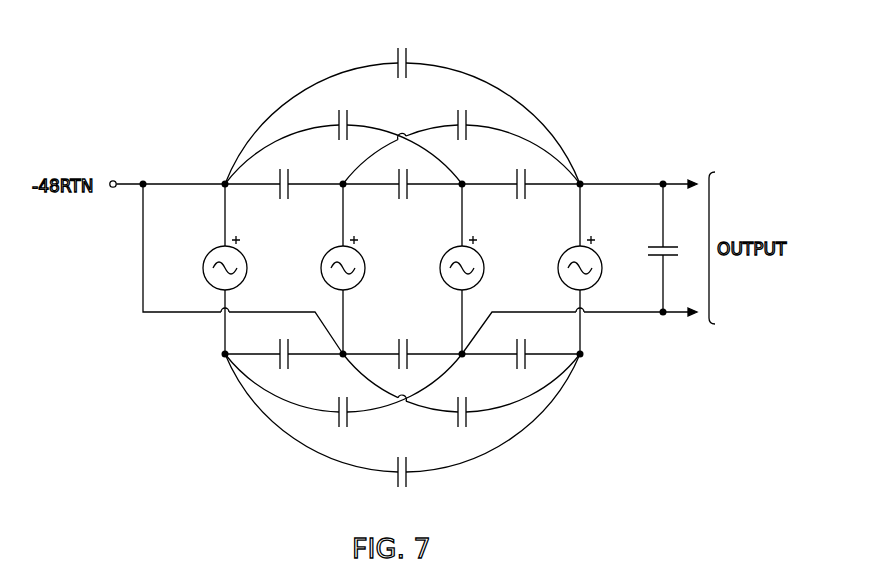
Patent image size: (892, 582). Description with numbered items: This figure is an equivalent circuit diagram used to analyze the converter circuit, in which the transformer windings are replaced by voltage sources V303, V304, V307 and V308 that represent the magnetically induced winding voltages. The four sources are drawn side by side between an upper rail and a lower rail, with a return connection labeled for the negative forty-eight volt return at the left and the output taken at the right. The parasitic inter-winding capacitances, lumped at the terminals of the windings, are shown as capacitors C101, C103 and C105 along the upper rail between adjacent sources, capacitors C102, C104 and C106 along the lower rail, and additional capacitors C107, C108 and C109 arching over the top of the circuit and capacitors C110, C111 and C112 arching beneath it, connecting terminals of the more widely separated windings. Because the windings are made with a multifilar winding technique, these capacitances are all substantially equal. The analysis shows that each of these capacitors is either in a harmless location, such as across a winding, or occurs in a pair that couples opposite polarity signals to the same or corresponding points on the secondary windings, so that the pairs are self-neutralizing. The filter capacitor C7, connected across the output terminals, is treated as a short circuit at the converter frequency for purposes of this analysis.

The parasitic inter-winding capacitance C101 is at (283, 196).
The parasitic inter-winding capacitance C102 is at (285, 343).
The parasitic inter-winding capacitance C103 is at (402, 196).
The parasitic inter-winding capacitance C104 is at (402, 343).
The parasitic inter-winding capacitance C105 is at (521, 196).
The parasitic inter-winding capacitance C106 is at (521, 343).
The parasitic inter-winding capacitance C107 is at (343, 135).
The parasitic inter-winding capacitance C108 is at (461, 135).
The parasitic inter-winding capacitance C109 is at (402, 105).
The parasitic inter-winding capacitance C110 is at (343, 402).
The parasitic inter-winding capacitance C111 is at (461, 402).
The parasitic inter-winding capacitance C112 is at (402, 432).
The filter capacitor C7 is at (650, 248).
The voltage source V303 is at (249, 269).
The voltage source V304 is at (367, 269).
The voltage source V307 is at (486, 269).
The voltage source V308 is at (604, 269).